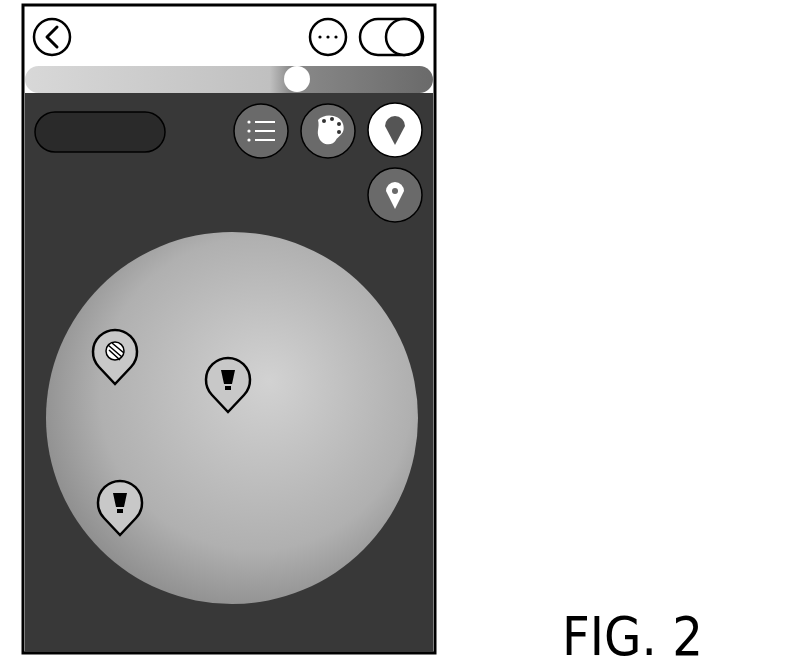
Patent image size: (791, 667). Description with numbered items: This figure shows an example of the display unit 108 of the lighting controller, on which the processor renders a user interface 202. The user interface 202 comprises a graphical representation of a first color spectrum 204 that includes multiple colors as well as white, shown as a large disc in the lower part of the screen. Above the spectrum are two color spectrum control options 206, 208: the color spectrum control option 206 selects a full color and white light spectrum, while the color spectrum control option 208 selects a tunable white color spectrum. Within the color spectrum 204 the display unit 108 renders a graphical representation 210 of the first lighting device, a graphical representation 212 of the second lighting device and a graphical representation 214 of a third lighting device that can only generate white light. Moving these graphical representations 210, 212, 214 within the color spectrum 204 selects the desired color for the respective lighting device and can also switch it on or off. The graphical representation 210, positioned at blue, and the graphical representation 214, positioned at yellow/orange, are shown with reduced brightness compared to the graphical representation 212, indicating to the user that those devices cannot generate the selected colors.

The display unit 108 is at (558, 76).
The user interface 202 is at (436, 167).
The first color spectrum 204 is at (397, 403).
The color spectrum control option 206 is at (421, 130).
The color spectrum control option 208 is at (423, 201).
The graphical representation of the first lighting device 210 is at (134, 503).
The graphical representation of the second lighting device 212 is at (126, 338).
The graphical representation of the third lighting device 214 is at (248, 382).